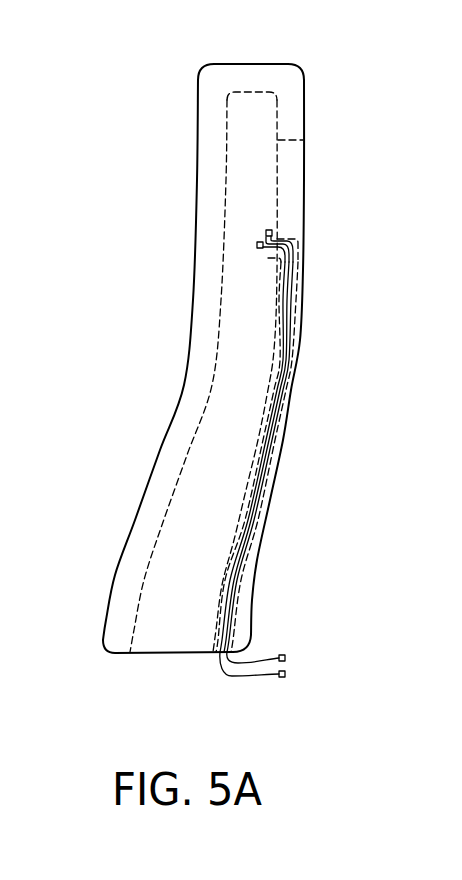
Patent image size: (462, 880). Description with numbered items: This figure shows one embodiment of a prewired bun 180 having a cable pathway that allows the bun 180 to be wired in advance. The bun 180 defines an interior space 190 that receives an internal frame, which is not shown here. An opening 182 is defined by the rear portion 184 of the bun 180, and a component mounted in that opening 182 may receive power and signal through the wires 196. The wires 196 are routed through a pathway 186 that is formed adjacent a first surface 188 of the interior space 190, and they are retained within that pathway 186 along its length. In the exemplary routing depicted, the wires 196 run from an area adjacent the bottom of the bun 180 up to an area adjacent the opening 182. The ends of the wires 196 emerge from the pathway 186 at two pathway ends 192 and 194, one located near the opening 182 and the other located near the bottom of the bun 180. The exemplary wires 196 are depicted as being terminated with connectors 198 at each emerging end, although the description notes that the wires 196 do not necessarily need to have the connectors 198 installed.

The bun 180 is at (317, 68).
The opening 182 is at (294, 162).
The rear portion 184 is at (306, 250).
The pathway 186 is at (243, 531).
The first surface 188 is at (257, 420).
The interior space 190 is at (243, 334).
The pathway end 192 is at (270, 262).
The pathway end 194 is at (219, 665).
The wires 196 is at (253, 255).
The connectors 198 is at (277, 226).